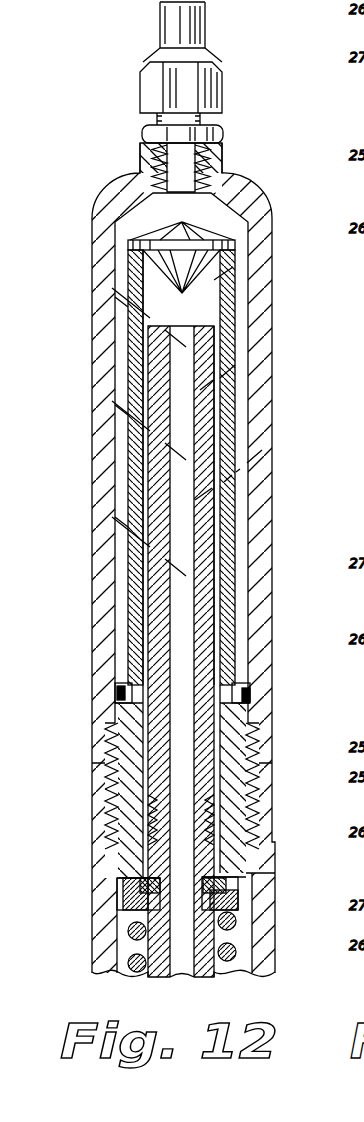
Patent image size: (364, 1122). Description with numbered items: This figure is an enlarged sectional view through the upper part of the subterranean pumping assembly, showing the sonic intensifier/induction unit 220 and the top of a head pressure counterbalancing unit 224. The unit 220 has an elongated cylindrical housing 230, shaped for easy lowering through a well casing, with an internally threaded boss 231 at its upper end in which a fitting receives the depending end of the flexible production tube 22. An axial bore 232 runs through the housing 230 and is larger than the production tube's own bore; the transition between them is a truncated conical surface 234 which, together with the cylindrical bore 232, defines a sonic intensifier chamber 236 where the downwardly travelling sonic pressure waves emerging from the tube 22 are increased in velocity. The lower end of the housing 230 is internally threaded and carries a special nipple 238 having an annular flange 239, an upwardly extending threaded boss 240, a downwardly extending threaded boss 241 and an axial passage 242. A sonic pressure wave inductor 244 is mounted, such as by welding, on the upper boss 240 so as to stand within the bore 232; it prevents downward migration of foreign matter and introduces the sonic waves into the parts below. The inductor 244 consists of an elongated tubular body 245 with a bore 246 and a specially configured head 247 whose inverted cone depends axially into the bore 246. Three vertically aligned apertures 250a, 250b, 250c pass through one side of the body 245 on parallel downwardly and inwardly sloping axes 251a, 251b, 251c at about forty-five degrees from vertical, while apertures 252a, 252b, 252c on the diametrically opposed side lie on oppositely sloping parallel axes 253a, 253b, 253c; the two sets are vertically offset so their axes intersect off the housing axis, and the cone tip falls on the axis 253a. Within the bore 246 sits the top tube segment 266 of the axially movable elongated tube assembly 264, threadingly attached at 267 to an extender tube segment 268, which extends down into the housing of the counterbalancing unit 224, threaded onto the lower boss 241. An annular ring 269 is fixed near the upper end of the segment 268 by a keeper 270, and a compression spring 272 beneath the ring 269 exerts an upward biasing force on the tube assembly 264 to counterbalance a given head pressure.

The flexible production tube 22 is at (163, 25).
The sonic intensifier/induction unit 220 is at (272, 527).
The head pressure counterbalancing unit 224 is at (273, 846).
The elongated cylindrical housing 230 is at (256, 500).
The internally threaded boss 231 is at (222, 167).
The axial bore 232 is at (263, 610).
The truncated conical surface 234 is at (229, 207).
The sonic intensifier chamber 236 is at (197, 218).
The special nipple 238 is at (274, 771).
The annular flange 239 is at (108, 773).
The upwardly extending threaded boss 240 is at (130, 722).
The downwardly extending threaded boss 241 is at (133, 833).
The axial passage 242 is at (224, 722).
The sonic pressure wave inductor 244 is at (131, 614).
The elongated tubular body 245 is at (234, 568).
The bore 246 is at (222, 591).
The head 247 is at (230, 247).
The aperture 250a is at (115, 297).
The aperture 250b is at (115, 405).
The aperture 250c is at (115, 517).
The axis 251a is at (108, 286).
The axis 251b is at (108, 399).
The axis 251c is at (108, 515).
The aperture 252a is at (233, 267).
The aperture 252b is at (213, 380).
The aperture 252c is at (212, 488).
The axis 253a is at (226, 258).
The axis 253b is at (235, 365).
The axis 253c is at (262, 450).
The elongated tube assembly 264 is at (142, 632).
The top tube segment 266 is at (128, 678).
The threaded attachment 267 is at (206, 818).
The extender tube segment 268 is at (200, 941).
The annular ring 269 is at (133, 913).
The keeper 270 is at (240, 877).
The compression spring 272 is at (230, 962).